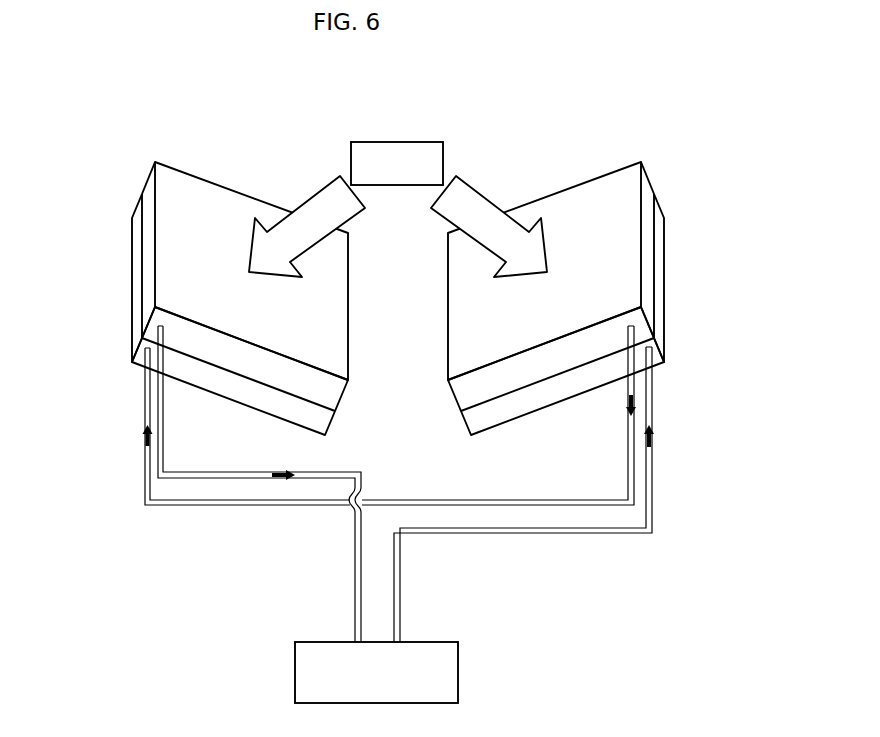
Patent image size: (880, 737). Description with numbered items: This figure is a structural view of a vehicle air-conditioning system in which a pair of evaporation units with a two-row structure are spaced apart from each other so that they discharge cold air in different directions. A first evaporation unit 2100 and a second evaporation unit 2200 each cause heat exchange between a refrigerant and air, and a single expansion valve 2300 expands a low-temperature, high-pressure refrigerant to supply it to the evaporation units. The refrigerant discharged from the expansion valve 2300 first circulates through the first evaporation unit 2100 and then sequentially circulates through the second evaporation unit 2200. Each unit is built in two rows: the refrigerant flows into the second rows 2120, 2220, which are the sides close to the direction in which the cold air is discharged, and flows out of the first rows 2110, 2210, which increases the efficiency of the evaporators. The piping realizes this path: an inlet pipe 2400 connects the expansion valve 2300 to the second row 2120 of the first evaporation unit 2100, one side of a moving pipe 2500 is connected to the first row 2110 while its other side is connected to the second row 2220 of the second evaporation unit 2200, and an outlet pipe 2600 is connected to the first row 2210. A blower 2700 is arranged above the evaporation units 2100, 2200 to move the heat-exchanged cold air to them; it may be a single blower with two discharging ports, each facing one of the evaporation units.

The first evaporation unit 2100 is at (662, 168).
The first row 2110 is at (648, 237).
The second row 2120 is at (662, 285).
The second evaporation unit 2200 is at (134, 168).
The first row 2210 is at (147, 237).
The second row 2220 is at (135, 285).
The expansion valve 2300 is at (294, 670).
The inlet pipe 2400 is at (552, 532).
The moving pipe 2500 is at (477, 501).
The outlet pipe 2600 is at (357, 573).
The blower 2700 is at (405, 142).